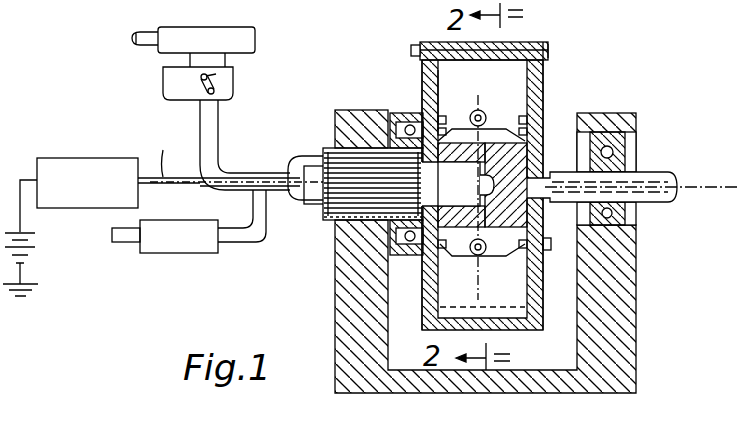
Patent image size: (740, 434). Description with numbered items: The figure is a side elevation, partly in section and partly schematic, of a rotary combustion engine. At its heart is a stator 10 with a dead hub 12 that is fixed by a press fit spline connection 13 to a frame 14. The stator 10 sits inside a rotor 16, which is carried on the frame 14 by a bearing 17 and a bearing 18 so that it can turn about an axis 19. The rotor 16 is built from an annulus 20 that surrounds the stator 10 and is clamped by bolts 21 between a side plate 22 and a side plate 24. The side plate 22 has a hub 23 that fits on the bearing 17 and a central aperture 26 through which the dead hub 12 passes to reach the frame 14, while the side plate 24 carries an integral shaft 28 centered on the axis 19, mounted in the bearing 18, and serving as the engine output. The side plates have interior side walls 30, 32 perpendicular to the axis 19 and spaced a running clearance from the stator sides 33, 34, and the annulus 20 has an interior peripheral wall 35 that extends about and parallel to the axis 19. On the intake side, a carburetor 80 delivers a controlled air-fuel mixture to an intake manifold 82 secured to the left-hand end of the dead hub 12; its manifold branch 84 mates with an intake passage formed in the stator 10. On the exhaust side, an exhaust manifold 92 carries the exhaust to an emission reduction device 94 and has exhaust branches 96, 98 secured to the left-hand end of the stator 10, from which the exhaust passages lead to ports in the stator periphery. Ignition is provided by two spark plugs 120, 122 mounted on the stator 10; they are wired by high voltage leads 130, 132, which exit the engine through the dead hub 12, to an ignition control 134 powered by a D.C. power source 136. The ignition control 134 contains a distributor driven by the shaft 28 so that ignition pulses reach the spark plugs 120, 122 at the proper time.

The stator 10 is at (524, 173).
The dead hub 12 is at (345, 198).
The press fit spline connection 13 is at (348, 220).
The frame 14 is at (362, 289).
The rotor 16 is at (550, 72).
The bearing 17 is at (410, 125).
The bearing 18 is at (608, 148).
The axis 19 is at (712, 185).
The annulus 20 is at (528, 42).
The bolts 21 is at (417, 46).
The side plate 22 is at (424, 72).
The hub 23 is at (441, 215).
The side plate 24 is at (528, 100).
The central aperture 26 is at (455, 250).
The shaft 28 is at (656, 172).
The interior side wall 30 is at (436, 135).
The interior side wall 32 is at (526, 100).
The stator side 33 is at (433, 145).
The stator side 34 is at (526, 136).
The interior peripheral wall 35 is at (505, 47).
The carburetor 80 is at (178, 80).
The intake manifold 82 is at (208, 112).
The manifold branch 84 is at (262, 176).
The exhaust manifold 92 is at (258, 206).
The emission reduction device 94 is at (197, 240).
The exhaust branch 96 is at (302, 204).
The exhaust branch 98 is at (308, 160).
The spark plug 120 is at (490, 250).
The spark plug 122 is at (480, 110).
The high voltage lead 130 is at (186, 184).
The high voltage lead 132 is at (165, 150).
The ignition control 134 is at (106, 157).
The D.C. power source 136 is at (36, 245).